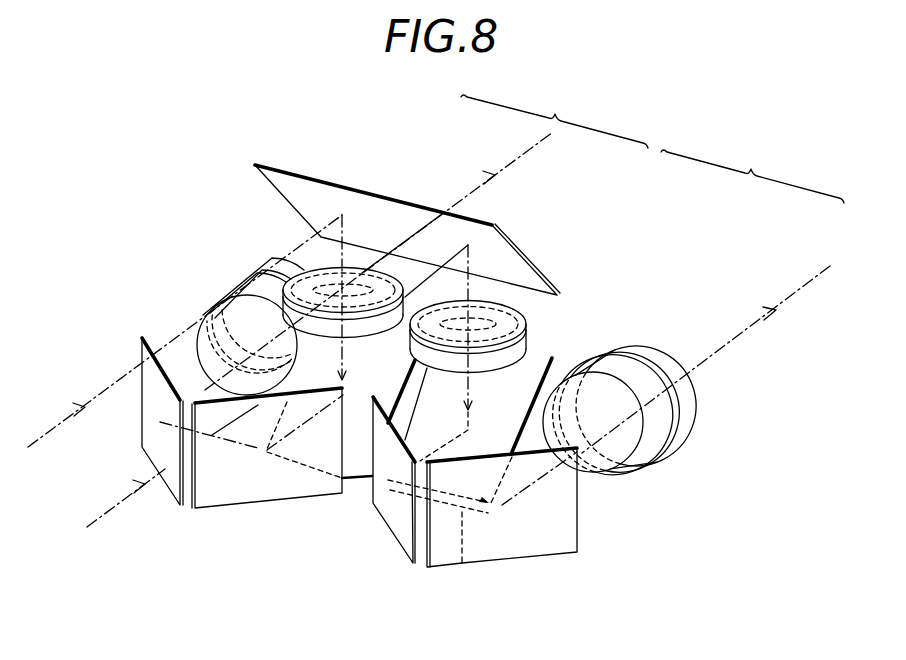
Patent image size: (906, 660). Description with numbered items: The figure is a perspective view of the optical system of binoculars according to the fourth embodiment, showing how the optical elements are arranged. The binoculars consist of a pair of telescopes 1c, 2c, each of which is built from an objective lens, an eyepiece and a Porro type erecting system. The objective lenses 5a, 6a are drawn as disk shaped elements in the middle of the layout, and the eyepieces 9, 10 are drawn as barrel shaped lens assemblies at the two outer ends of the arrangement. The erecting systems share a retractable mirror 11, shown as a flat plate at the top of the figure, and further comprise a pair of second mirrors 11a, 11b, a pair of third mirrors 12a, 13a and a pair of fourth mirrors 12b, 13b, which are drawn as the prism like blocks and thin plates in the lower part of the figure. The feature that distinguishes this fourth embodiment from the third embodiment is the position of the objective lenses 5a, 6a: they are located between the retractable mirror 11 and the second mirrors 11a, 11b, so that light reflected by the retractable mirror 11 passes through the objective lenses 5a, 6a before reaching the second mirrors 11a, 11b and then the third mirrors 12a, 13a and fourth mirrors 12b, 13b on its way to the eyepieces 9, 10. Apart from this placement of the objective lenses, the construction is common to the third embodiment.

The telescope 1c is at (752, 173).
The telescope 2c is at (554, 119).
The objective lens 5a is at (534, 335).
The objective lens 6a is at (326, 261).
The eyepiece 9 is at (707, 408).
The eyepiece 10 is at (219, 288).
The retractable mirror 11 is at (345, 186).
The second mirror 11a is at (462, 565).
The second mirror 11b is at (373, 503).
The third mirror 12a is at (397, 541).
The fourth mirror 12b is at (517, 562).
The third mirror 13a is at (250, 509).
The fourth mirror 13b is at (160, 476).